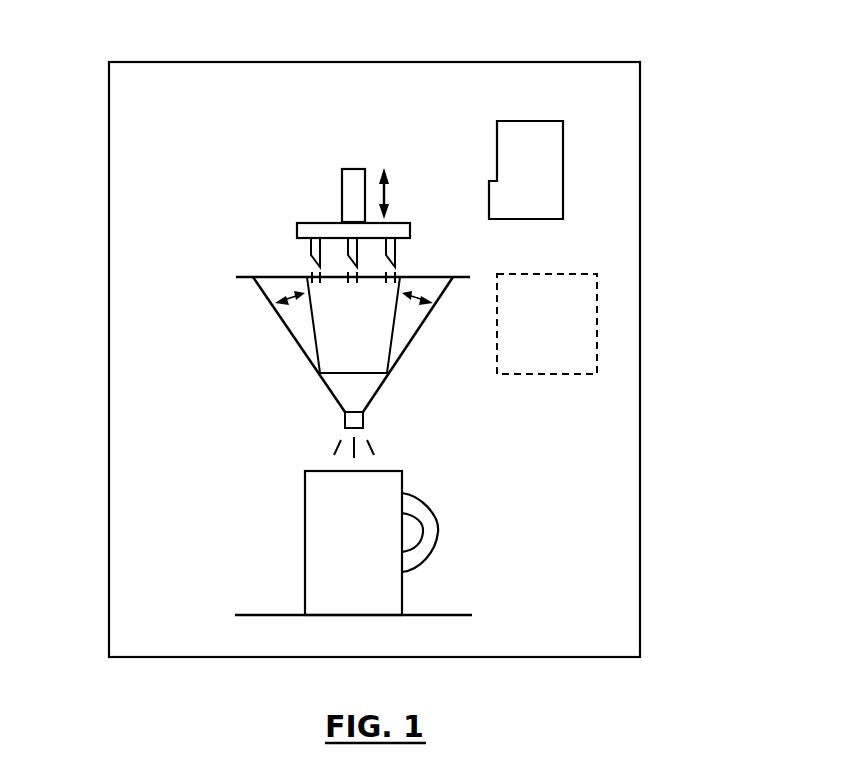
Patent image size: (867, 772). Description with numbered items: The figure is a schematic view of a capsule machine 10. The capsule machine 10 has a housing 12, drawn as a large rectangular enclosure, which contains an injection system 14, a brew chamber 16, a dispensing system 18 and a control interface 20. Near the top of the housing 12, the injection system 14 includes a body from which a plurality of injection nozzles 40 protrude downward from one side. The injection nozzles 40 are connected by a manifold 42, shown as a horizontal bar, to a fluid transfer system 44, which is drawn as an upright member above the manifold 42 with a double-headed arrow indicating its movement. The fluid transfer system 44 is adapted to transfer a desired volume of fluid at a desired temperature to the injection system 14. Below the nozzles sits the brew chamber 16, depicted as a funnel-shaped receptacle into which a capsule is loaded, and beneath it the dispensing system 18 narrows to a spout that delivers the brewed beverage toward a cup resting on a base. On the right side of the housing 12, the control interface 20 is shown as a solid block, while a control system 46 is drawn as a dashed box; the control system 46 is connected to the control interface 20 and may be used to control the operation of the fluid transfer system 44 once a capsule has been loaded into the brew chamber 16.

The capsule machine 10 is at (658, 259).
The housing 12 is at (602, 539).
The injection system 14 is at (302, 138).
The brew chamber 16 is at (258, 339).
The dispensing system 18 is at (396, 396).
The control interface 20 is at (542, 163).
The injection nozzles 40 is at (313, 253).
The manifold 42 is at (315, 229).
The fluid transfer system 44 is at (358, 180).
The control system 46 is at (572, 332).